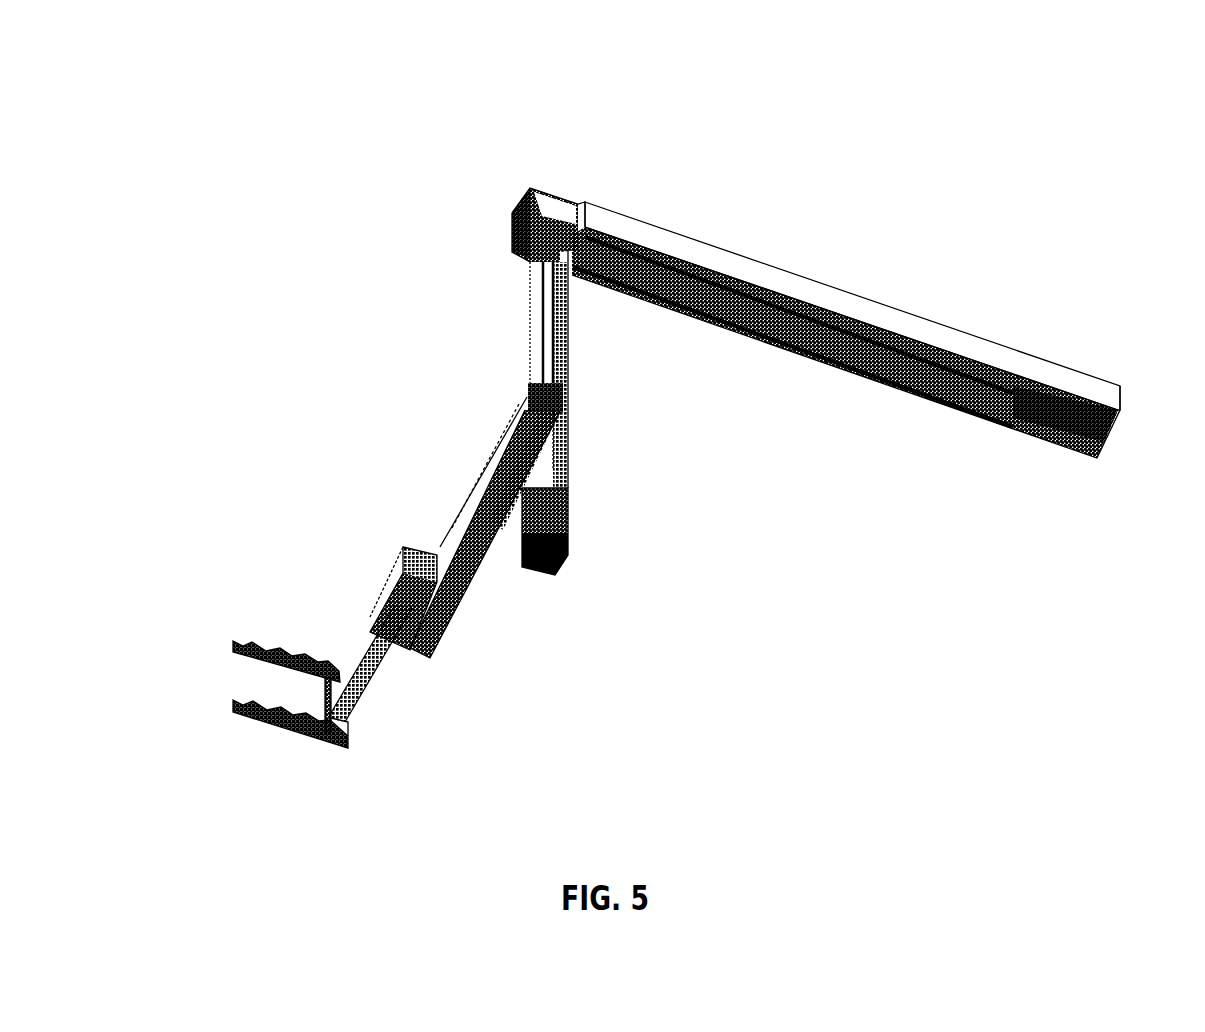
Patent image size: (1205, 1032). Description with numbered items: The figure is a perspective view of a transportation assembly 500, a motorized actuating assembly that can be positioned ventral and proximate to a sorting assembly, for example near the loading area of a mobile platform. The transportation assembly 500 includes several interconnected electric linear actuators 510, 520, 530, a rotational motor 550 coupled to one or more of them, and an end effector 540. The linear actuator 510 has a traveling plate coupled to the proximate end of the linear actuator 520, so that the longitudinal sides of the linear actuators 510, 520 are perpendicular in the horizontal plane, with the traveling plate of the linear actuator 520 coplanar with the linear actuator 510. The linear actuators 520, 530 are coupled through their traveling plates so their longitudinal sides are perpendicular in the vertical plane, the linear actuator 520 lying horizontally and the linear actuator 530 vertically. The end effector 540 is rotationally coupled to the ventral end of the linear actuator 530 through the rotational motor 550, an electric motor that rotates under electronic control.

The transportation assembly 500 is at (985, 170).
The linear actuator 510 is at (653, 233).
The linear actuator 520 is at (517, 325).
The linear actuator 530 is at (453, 517).
The end effector 540 is at (345, 728).
The rotational motor 550 is at (363, 615).